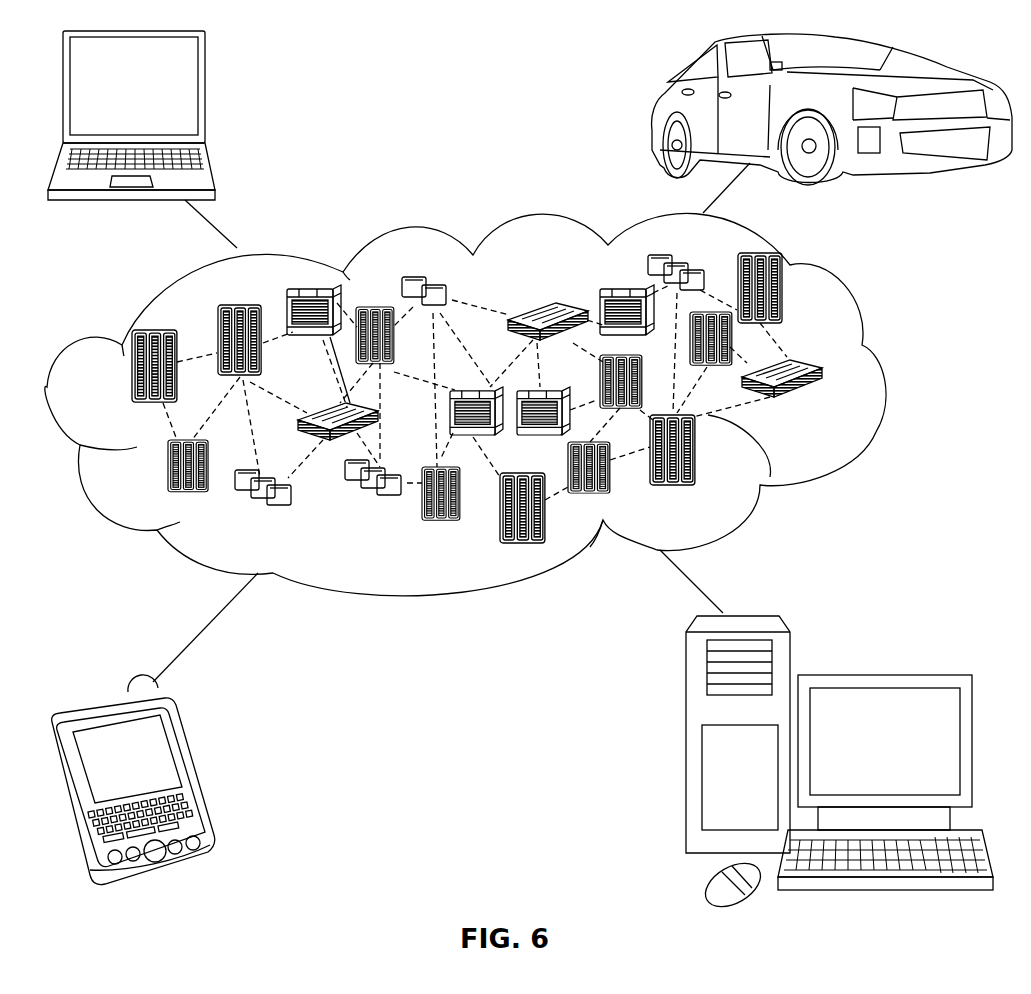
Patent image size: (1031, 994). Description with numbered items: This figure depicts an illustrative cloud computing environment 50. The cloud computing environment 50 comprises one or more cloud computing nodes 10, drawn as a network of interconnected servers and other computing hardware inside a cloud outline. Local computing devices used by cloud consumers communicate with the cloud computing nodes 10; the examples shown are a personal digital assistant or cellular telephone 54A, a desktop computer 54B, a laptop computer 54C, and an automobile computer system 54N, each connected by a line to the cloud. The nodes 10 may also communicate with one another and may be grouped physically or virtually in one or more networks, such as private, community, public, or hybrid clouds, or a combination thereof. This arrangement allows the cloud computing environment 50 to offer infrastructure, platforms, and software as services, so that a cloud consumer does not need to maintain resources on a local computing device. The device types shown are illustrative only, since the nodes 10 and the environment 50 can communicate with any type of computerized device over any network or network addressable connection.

The cloud computing nodes 10 is at (825, 407).
The cloud computing environment 50 is at (883, 376).
The personal digital assistant or cellular telephone 54A is at (205, 775).
The desktop computer 54B is at (880, 675).
The laptop computer 54C is at (205, 93).
The automobile computer system 54N is at (654, 100).